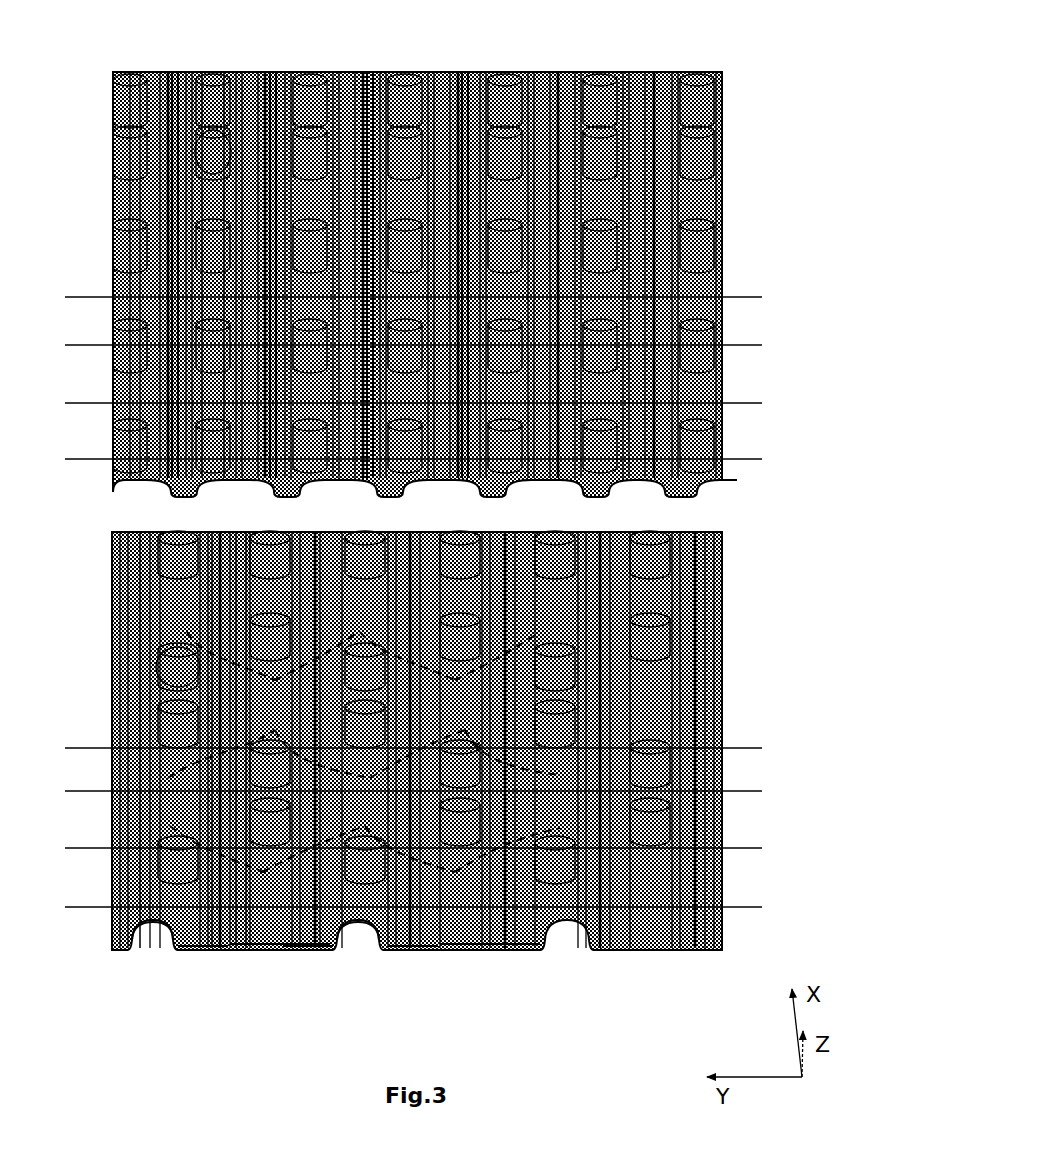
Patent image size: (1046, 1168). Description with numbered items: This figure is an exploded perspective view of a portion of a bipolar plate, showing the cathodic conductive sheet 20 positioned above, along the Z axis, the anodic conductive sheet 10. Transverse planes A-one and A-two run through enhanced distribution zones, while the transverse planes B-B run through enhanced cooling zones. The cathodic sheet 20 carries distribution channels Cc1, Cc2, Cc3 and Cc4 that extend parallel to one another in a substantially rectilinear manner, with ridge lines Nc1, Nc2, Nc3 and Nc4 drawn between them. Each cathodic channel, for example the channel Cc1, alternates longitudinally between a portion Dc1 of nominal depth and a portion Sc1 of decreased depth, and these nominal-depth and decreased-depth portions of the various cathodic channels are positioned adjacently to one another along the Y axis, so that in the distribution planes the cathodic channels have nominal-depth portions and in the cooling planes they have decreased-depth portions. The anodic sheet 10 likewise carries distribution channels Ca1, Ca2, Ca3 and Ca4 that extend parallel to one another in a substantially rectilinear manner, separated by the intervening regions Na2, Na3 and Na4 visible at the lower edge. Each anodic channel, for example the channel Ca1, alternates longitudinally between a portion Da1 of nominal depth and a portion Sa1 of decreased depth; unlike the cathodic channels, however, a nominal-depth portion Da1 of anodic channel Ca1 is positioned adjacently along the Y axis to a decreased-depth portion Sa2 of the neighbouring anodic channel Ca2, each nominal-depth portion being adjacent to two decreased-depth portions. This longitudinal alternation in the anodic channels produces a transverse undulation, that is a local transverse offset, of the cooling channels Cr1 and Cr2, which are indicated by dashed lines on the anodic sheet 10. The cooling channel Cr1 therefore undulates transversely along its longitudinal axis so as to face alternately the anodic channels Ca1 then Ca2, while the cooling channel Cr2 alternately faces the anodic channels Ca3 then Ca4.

The cathodic conductive sheet 20 is at (724, 122).
The anodic conductive sheet 10 is at (724, 590).
The ridge line Nc1 is at (178, 70).
The ridge line Nc2 is at (270, 70).
The ridge line Nc3 is at (363, 70).
The ridge line Nc4 is at (452, 70).
The cathodic distribution channel Cc1 is at (222, 258).
The cathodic distribution channel Cc2 is at (317, 258).
The cathodic distribution channel Cc3 is at (412, 258).
The convex column Cc4 is at (501, 258).
The portion of decreased depth Sc1 is at (222, 116).
The portion of nominal depth Dc1 is at (222, 162).
The portion of decreased depth Sa2 is at (277, 547).
The portion of decreased depth Sa1 is at (178, 624).
The portion of nominal depth Da1 is at (178, 545).
The cooling channel Cr1 is at (261, 755).
The cooling channel Cr2 is at (455, 755).
The anodic distribution channel Ca1 is at (155, 951).
The anodic distribution channel Ca2 is at (280, 962).
The anodic distribution channel Ca3 is at (361, 951).
The anodic distribution channel Ca4 is at (490, 962).
The concave portion Na2 is at (205, 956).
The concave portion Na3 is at (310, 956).
The concave portion Na4 is at (415, 956).